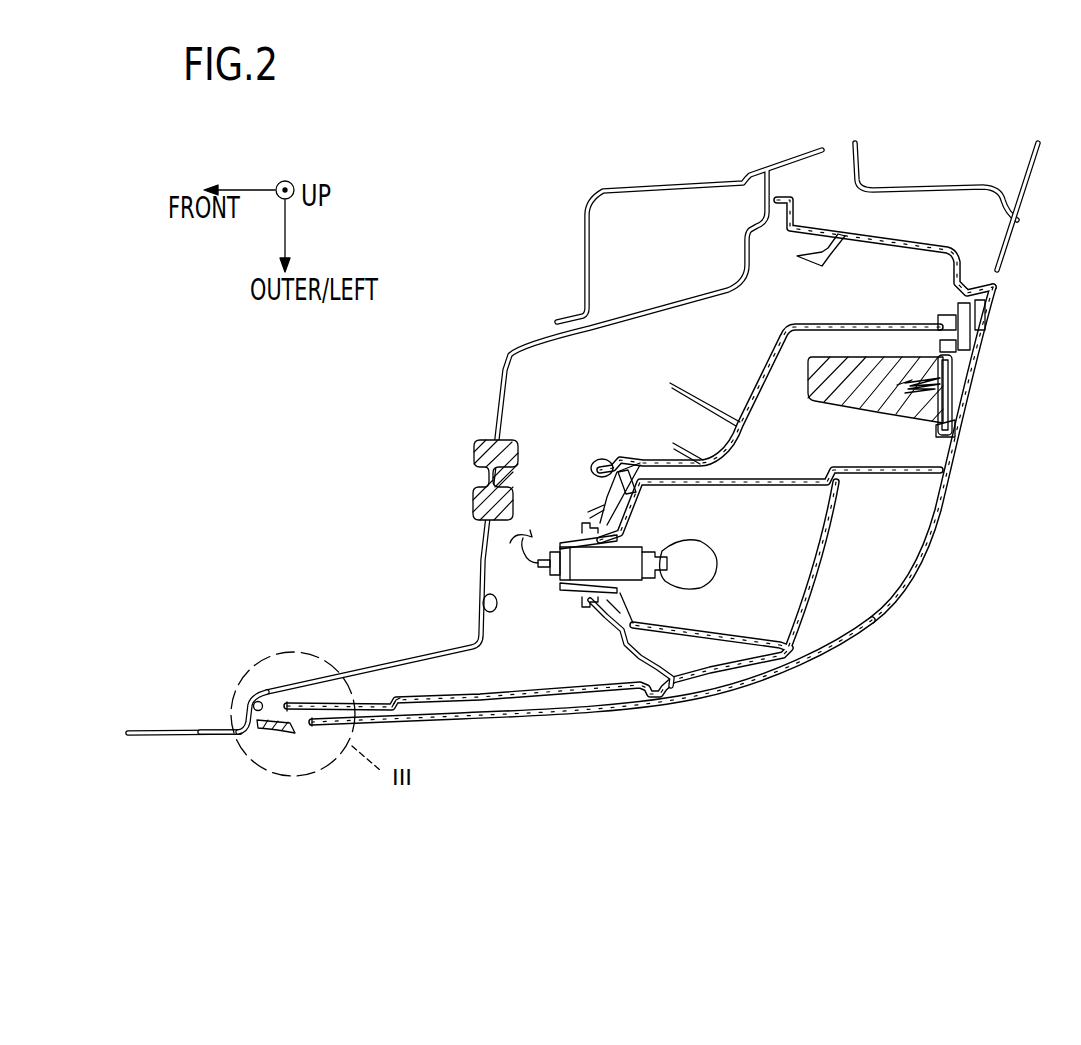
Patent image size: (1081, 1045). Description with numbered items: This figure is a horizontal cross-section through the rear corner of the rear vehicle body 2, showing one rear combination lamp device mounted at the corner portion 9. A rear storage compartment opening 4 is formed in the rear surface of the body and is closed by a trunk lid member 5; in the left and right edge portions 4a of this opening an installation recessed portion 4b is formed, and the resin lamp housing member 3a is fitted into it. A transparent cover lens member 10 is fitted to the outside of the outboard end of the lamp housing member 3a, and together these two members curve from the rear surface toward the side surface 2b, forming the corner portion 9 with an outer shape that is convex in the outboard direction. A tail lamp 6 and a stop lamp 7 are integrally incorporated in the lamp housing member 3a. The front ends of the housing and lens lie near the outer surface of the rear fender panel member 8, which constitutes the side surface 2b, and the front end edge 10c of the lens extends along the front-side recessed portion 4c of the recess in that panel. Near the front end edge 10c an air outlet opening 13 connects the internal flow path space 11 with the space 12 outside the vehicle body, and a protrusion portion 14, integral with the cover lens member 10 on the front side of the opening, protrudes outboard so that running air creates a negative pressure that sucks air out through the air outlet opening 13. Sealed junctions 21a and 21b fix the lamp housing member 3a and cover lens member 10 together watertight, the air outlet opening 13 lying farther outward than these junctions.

The rear vehicle body 2 is at (1043, 124).
The side surface 2b is at (167, 749).
The lamp housing member 3a is at (432, 695).
The rear storage compartment opening 4 is at (816, 150).
The edge portion 4a is at (849, 164).
The installation recessed portion 4b is at (483, 603).
The front-side recessed portion 4c is at (252, 733).
The trunk lid member 5 is at (1015, 233).
The tail lamp 6 is at (742, 556).
The stop lamp 7 is at (975, 378).
The rear fender panel member 8 is at (204, 738).
The corner portion 9 is at (915, 598).
The cover lens member 10 is at (818, 681).
The front end edge 10c is at (268, 735).
The internal flow path space 11 is at (262, 688).
The space outside of the vehicle body 12 is at (390, 829).
The air outlet opening 13 is at (293, 703).
The protrusion portion 14 is at (297, 746).
The sealed junction 21a is at (657, 700).
The sealed junction 21b is at (350, 728).